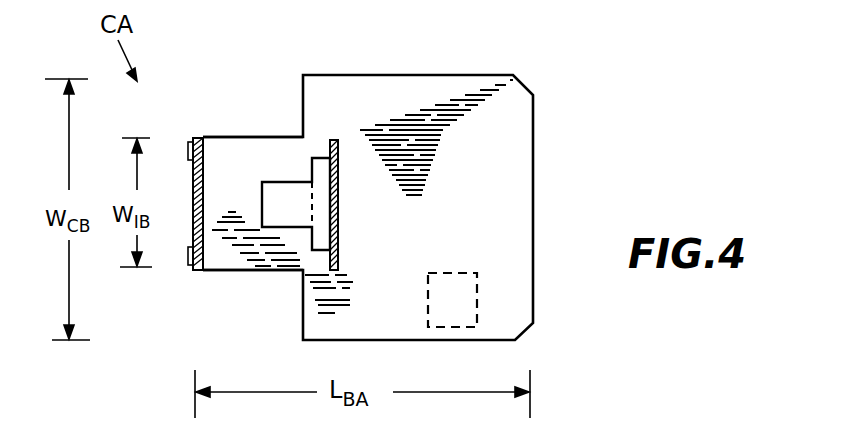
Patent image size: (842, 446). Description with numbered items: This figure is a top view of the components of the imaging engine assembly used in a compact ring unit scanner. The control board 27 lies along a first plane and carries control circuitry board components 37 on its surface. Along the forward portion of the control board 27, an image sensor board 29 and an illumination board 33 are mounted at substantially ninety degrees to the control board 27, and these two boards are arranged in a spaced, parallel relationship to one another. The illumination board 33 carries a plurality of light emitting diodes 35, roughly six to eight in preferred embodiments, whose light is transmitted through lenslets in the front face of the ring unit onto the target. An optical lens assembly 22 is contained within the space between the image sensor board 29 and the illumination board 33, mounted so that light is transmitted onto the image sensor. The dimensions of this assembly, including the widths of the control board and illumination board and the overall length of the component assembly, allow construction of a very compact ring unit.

The control board 27 is at (537, 120).
The image sensor board 29 is at (334, 147).
The illumination board 33 is at (206, 158).
The light emitting diodes 35 is at (190, 150).
The optical lens assembly 22 is at (288, 228).
The control circuitry board components 37 is at (477, 300).